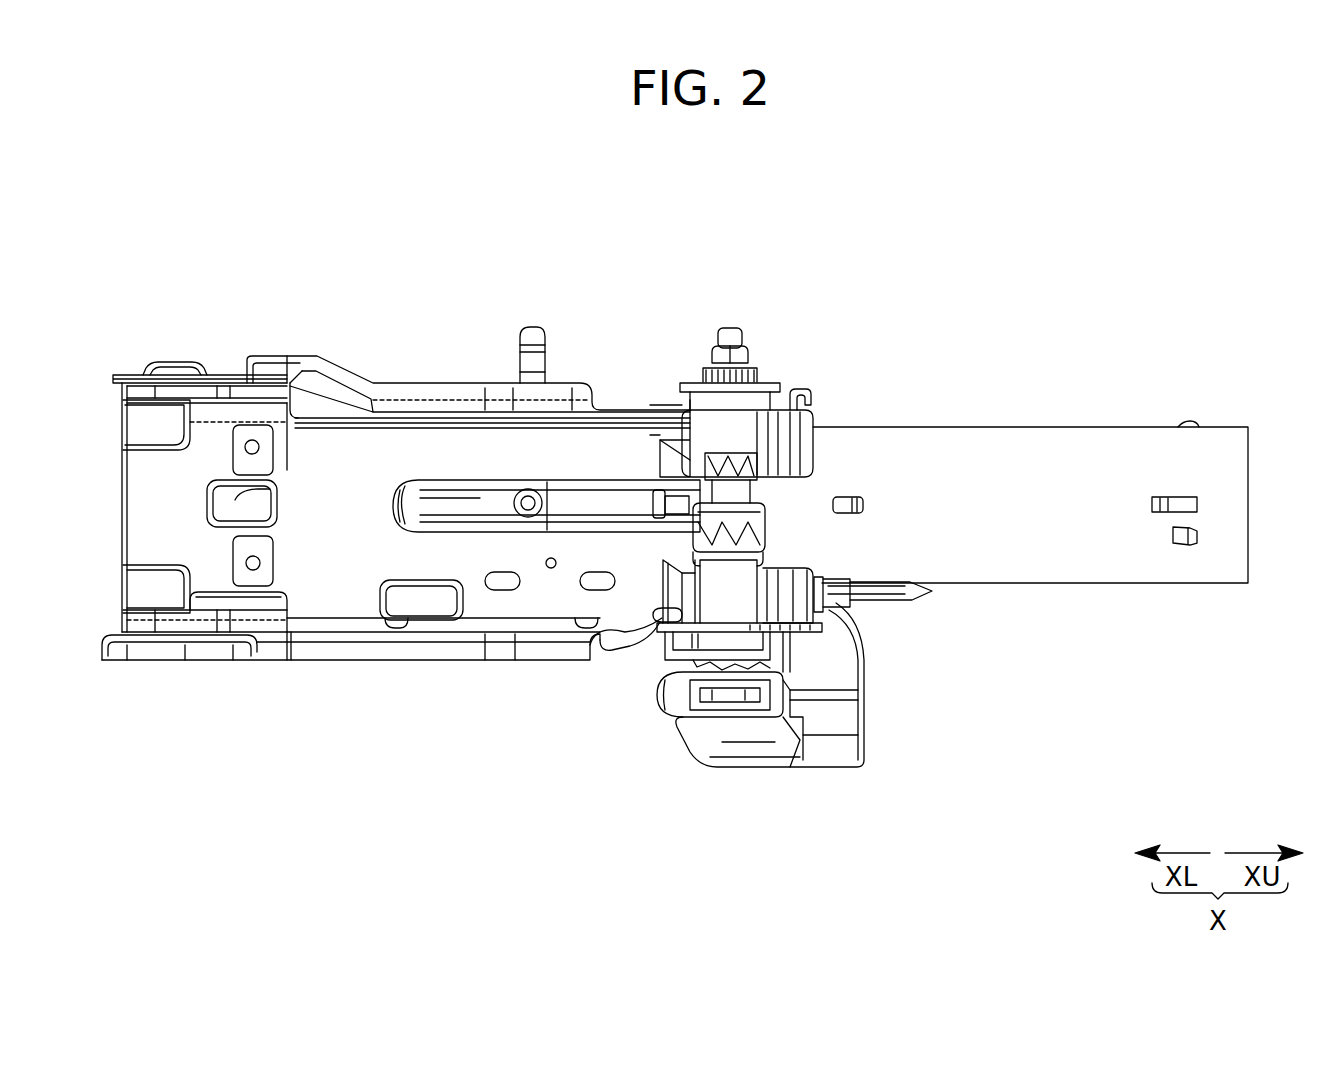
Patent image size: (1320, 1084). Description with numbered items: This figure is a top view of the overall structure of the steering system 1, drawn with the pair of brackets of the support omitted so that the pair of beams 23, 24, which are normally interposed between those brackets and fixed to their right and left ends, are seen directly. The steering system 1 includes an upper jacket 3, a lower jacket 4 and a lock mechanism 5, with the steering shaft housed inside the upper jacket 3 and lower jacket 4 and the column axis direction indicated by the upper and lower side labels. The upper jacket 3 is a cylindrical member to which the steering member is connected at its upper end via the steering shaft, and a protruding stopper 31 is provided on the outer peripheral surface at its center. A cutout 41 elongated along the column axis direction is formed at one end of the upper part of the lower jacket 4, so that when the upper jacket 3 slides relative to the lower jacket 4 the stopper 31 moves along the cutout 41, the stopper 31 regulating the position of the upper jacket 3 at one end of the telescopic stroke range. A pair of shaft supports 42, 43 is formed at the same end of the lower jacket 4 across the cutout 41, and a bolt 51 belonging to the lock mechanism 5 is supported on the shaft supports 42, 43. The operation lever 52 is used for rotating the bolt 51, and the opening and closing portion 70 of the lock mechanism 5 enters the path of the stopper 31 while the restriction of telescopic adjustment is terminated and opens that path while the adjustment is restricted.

The steering system 1 is at (1228, 212).
The upper jacket 3 is at (1080, 440).
The lower jacket 4 is at (305, 603).
The lock mechanism 5 is at (664, 775).
The beam 23 is at (408, 393).
The beam 24 is at (386, 650).
The stopper 31 is at (845, 515).
The cutout 41 is at (400, 498).
The shaft support 42 is at (705, 598).
The shaft support 43 is at (710, 430).
The bolt 51 is at (714, 494).
The operation lever 52 is at (832, 748).
The opening and closing portion 70 is at (778, 511).